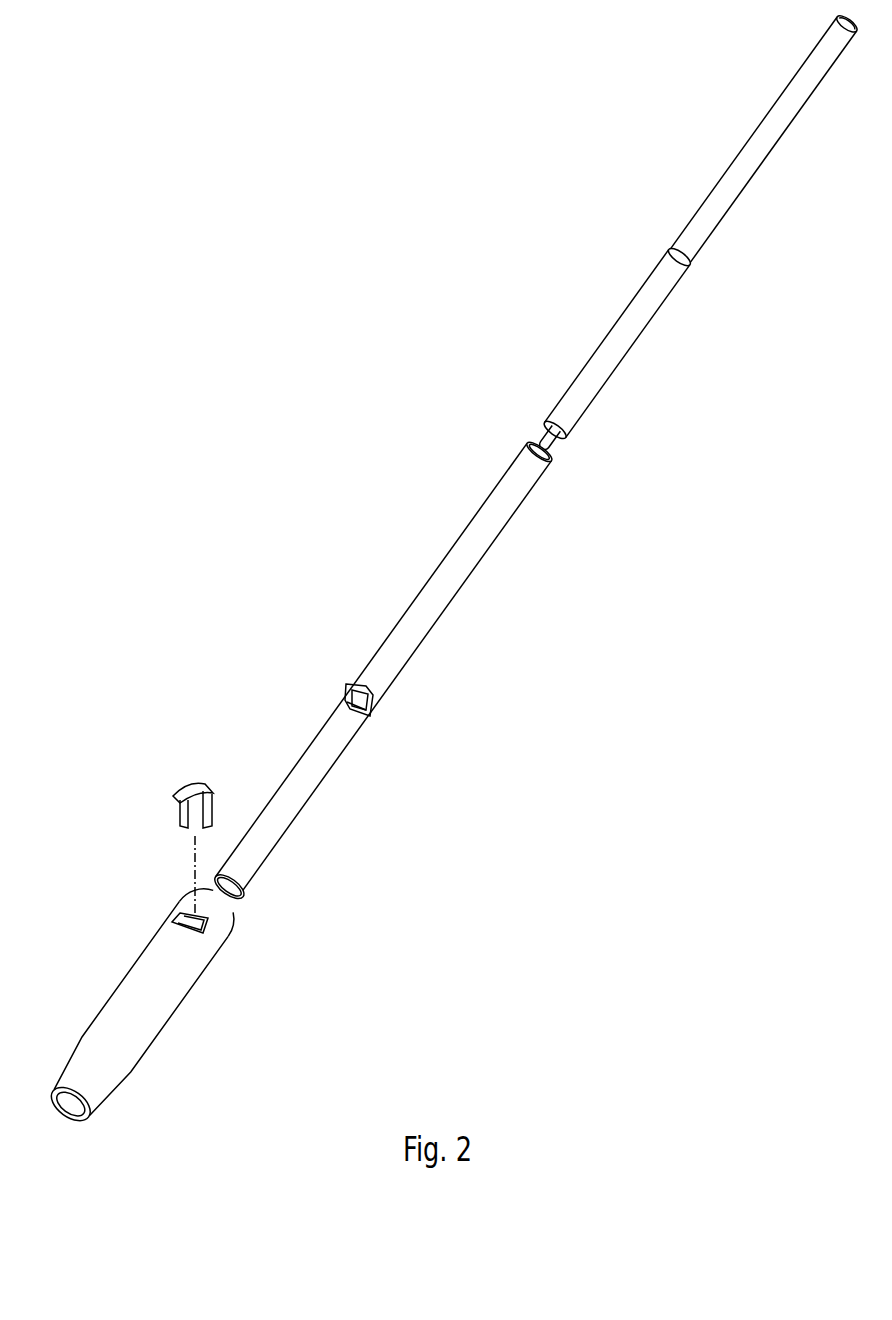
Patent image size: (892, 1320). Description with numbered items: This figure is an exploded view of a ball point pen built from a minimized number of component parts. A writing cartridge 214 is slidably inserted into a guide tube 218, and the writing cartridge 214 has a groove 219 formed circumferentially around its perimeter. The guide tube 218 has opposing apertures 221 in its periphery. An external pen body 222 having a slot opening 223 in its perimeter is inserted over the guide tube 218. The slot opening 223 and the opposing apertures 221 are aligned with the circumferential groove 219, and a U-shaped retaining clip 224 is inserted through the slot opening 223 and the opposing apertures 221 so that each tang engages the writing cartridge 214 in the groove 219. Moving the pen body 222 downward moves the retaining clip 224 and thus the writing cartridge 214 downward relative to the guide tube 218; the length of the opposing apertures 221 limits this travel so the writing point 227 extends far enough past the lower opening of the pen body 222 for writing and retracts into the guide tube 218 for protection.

The writing cartridge 214 is at (748, 160).
The groove 219 is at (690, 260).
The writing point 227 is at (550, 446).
The guide tube 218 is at (486, 528).
The opposing apertures 221 is at (370, 710).
The external pen body 222 is at (162, 985).
The slot opening 223 is at (185, 913).
The U-shaped retaining clip 224 is at (196, 786).